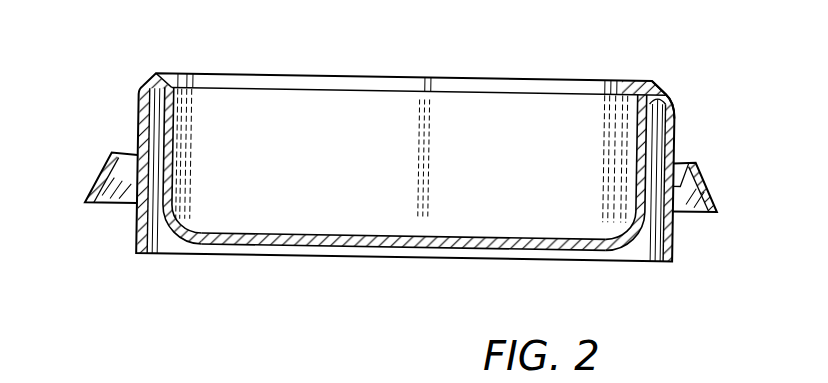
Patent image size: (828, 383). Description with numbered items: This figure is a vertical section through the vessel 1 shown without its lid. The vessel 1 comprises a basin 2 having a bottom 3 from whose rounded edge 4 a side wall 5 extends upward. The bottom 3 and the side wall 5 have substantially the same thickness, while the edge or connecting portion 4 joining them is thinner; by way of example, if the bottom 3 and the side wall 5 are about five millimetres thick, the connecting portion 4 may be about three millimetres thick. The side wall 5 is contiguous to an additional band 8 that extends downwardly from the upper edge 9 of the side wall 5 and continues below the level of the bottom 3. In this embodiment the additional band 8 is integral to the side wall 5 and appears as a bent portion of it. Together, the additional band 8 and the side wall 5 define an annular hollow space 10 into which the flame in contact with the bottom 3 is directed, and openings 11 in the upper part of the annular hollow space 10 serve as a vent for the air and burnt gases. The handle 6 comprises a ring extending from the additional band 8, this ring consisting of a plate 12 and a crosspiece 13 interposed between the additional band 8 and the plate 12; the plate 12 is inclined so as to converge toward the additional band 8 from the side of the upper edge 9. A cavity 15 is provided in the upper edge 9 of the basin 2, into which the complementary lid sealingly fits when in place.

The vessel 1 is at (212, 266).
The basin 2 is at (371, 201).
The bottom 3 is at (460, 236).
The edge or connecting portion 4 is at (192, 224).
The side wall 5 is at (173, 144).
The handle 6 is at (88, 175).
The additional band 8 is at (671, 127).
The upper edge 9 is at (655, 81).
The annular hollow space 10 is at (147, 238).
The openings 11 is at (145, 88).
The plate 12 is at (713, 196).
The crosspiece 13 is at (679, 172).
The cavity 15 is at (172, 87).